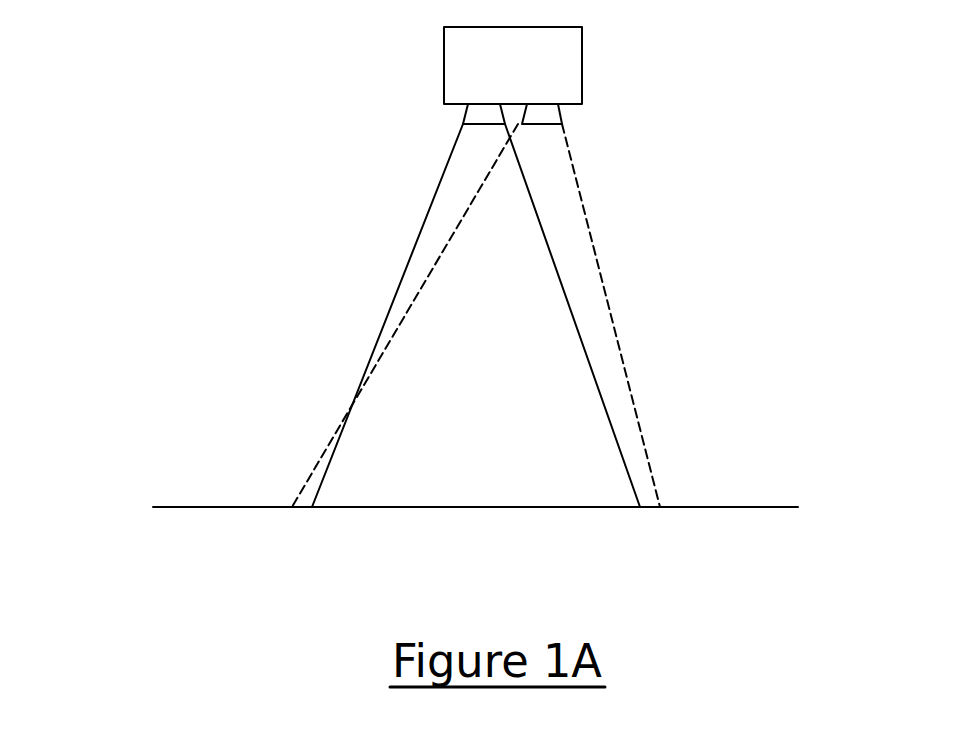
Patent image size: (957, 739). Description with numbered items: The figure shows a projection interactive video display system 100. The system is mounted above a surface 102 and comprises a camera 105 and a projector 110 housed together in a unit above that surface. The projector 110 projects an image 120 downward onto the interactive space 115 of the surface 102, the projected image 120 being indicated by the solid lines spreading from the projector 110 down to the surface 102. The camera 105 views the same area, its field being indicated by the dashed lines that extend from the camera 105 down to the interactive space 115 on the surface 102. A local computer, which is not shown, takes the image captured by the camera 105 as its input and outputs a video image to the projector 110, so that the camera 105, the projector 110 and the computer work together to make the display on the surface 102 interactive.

The projection interactive video display system 100 is at (100, 38).
The surface 102 is at (785, 548).
The camera 105 is at (563, 121).
The projector 110 is at (466, 112).
The interactive space 115 is at (615, 305).
The image 120 is at (398, 269).